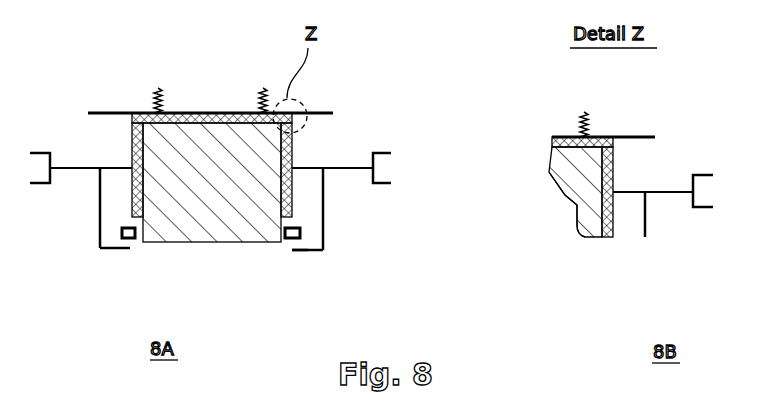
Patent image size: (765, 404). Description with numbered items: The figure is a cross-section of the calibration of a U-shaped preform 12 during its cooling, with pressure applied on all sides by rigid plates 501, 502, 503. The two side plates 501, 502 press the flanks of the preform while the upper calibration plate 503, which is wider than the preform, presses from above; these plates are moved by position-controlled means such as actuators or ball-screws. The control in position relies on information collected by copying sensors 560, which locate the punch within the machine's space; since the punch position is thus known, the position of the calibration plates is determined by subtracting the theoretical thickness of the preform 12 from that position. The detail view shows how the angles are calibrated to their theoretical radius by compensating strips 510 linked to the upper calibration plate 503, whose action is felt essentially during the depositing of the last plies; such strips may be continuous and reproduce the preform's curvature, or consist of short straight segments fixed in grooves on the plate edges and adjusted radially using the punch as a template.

The preform 12 is at (583, 215).
The rigid plate 501 is at (130, 200).
The rigid plate 502 is at (293, 213).
The upper calibration plate 503 is at (110, 112).
The compensating strips 510 is at (611, 137).
The copying sensors 560 is at (308, 251).